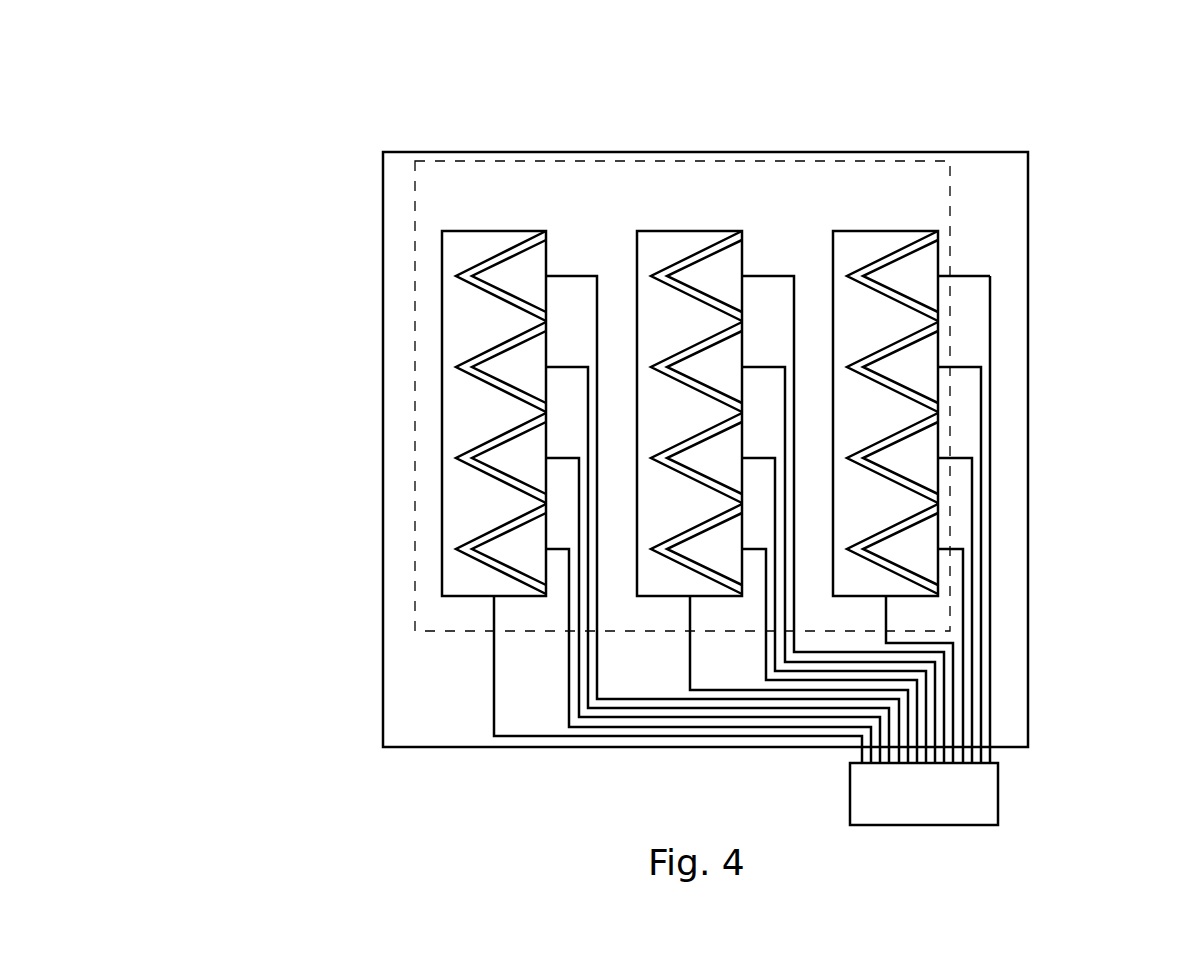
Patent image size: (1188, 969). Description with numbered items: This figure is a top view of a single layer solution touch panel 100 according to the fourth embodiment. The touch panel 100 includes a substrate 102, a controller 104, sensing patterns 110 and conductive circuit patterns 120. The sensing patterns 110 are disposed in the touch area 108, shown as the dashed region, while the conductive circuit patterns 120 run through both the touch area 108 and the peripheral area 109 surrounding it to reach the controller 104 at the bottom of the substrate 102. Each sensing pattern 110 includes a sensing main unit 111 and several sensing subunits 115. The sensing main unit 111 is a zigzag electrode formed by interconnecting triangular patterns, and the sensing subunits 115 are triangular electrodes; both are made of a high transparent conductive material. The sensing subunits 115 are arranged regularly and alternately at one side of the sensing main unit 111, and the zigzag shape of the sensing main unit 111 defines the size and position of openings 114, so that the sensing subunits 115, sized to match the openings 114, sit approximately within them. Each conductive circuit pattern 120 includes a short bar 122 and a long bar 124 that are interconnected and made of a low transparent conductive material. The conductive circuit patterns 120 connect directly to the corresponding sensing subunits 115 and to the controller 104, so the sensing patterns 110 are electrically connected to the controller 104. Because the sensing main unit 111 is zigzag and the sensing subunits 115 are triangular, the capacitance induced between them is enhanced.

The single layer solution touch panel 100 is at (217, 73).
The substrate 102 is at (403, 163).
The controller 104 is at (990, 793).
The touch area 108 is at (683, 188).
The peripheral area 109 is at (835, 482).
The sensing pattern 110 is at (900, 188).
The sensing main unit 111 is at (473, 248).
The opening 114 is at (755, 226).
The sensing subunit 115 is at (548, 253).
The conductive circuit pattern 120 is at (1057, 482).
The short bar 122 is at (965, 272).
The long bar 124 is at (995, 310).